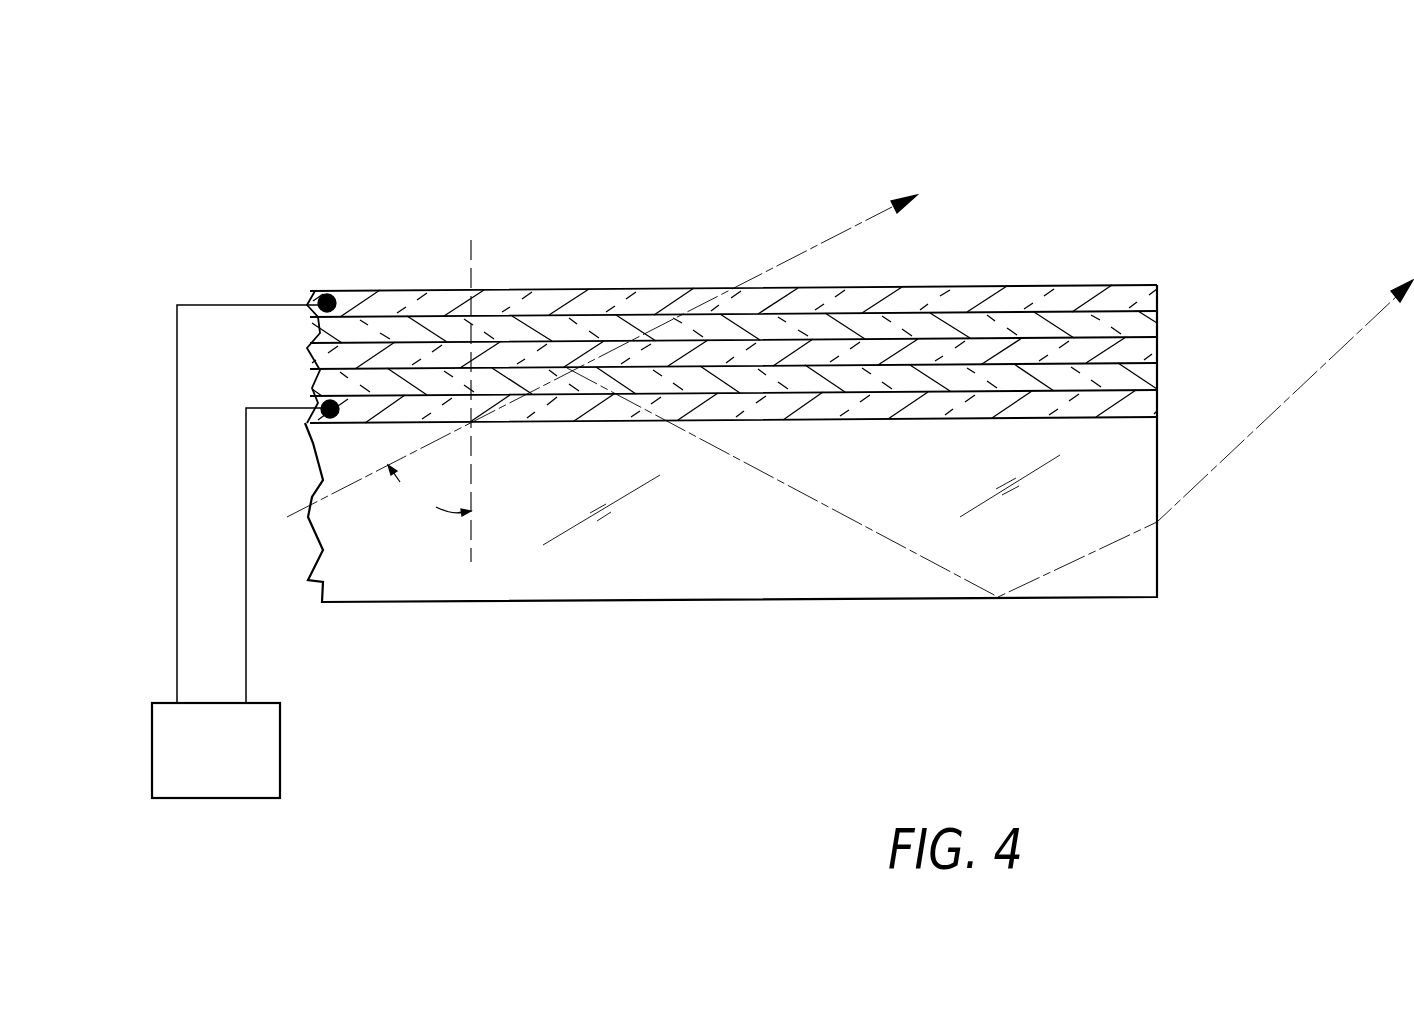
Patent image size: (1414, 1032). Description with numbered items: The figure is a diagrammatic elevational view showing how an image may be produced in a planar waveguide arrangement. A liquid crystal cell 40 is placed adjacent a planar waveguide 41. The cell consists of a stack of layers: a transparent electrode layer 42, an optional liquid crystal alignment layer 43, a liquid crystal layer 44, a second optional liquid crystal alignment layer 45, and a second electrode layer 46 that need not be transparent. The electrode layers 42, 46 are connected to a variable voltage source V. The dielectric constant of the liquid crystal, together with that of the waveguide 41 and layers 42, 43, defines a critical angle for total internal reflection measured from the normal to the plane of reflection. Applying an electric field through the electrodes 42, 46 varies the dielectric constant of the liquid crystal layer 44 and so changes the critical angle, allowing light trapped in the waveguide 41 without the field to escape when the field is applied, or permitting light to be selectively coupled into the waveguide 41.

The liquid crystal cell 40 is at (305, 421).
The planar waveguide 41 is at (638, 575).
The transparent electrode layer 42 is at (1166, 403).
The liquid crystal alignment layer 43 is at (1166, 372).
The liquid crystal layer 44 is at (1166, 347).
The second liquid crystal alignment layer 45 is at (1166, 321).
The second electrode layer 46 is at (1118, 276).
The variable voltage source V is at (280, 752).